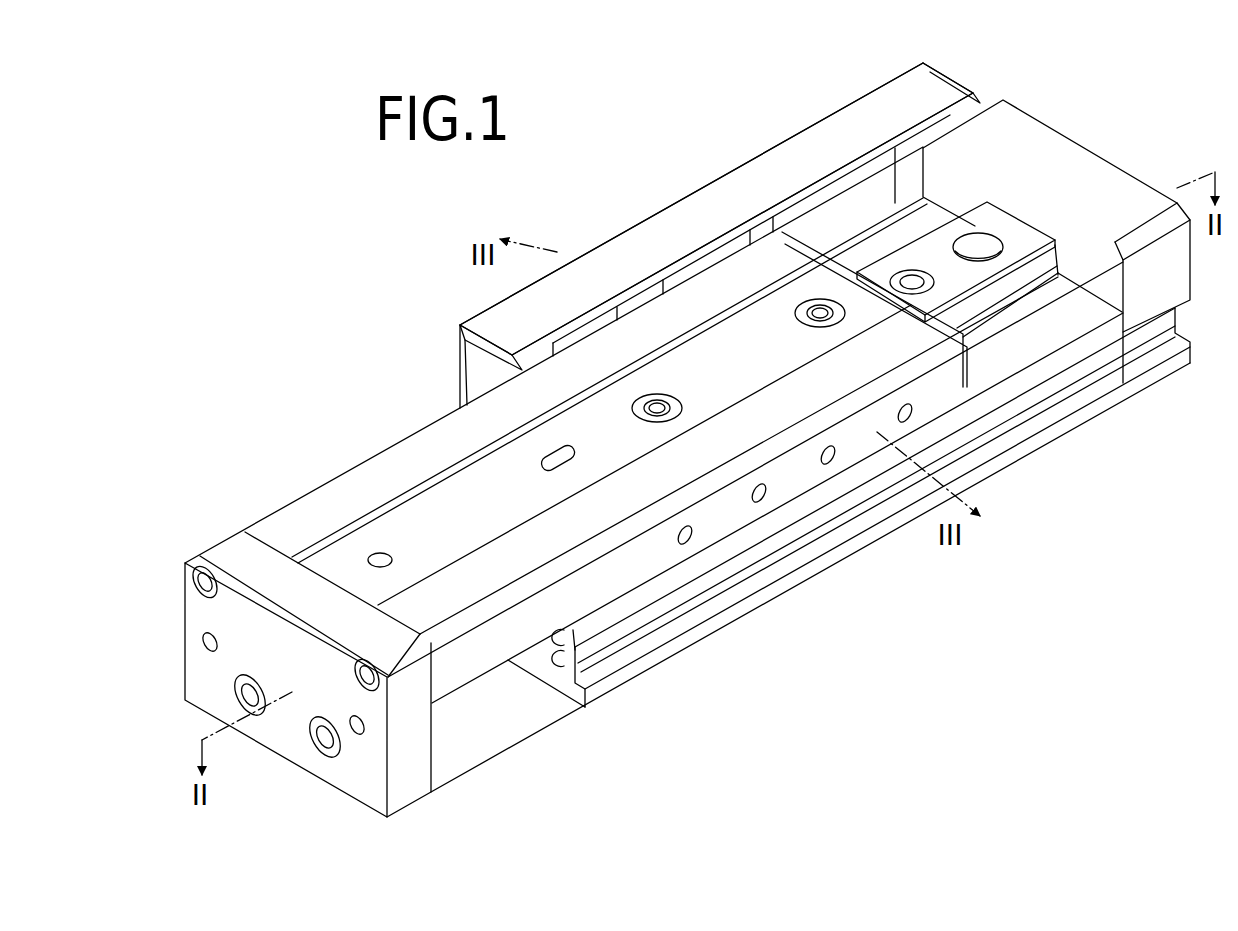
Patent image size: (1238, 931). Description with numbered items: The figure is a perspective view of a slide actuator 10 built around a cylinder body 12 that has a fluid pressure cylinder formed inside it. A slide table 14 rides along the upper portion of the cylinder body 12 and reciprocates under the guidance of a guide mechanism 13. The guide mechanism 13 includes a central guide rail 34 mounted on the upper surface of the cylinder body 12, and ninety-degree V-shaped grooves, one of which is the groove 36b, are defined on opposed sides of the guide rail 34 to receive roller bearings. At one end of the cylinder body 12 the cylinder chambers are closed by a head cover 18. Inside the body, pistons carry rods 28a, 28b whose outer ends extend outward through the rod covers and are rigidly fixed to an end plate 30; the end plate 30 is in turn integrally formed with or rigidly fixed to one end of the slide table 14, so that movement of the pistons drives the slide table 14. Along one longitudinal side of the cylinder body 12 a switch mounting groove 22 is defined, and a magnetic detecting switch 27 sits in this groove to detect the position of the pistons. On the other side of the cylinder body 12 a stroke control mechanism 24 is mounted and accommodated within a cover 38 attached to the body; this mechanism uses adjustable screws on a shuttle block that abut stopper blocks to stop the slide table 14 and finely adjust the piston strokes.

The slide actuator 10 is at (458, 292).
The cylinder body 12 is at (990, 378).
The guide mechanism 13 is at (928, 232).
The slide table 14 is at (395, 465).
The head cover 18 is at (1140, 195).
The switch mounting groove 22 is at (800, 545).
The stroke control mechanism 24 is at (628, 232).
The magnetic detecting switch 27 is at (538, 680).
The rod 28a is at (240, 700).
The rod 28b is at (312, 745).
The end plate 30 is at (203, 612).
The central guide rail 34 is at (1030, 233).
The V-shaped groove 36b is at (1010, 282).
The cover 38 is at (818, 142).